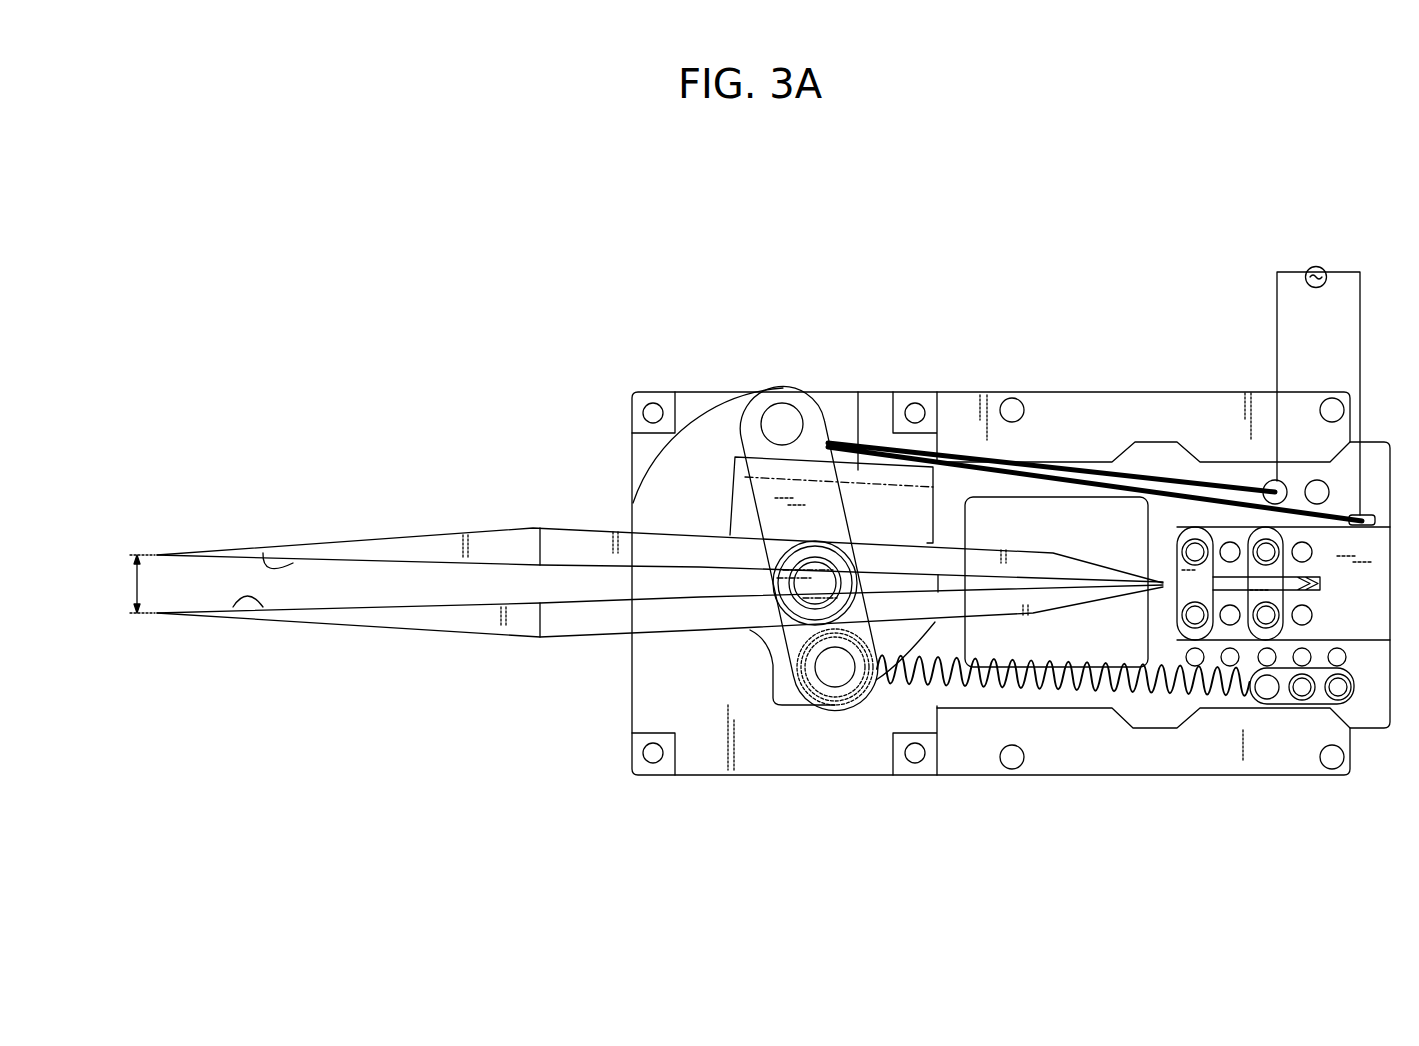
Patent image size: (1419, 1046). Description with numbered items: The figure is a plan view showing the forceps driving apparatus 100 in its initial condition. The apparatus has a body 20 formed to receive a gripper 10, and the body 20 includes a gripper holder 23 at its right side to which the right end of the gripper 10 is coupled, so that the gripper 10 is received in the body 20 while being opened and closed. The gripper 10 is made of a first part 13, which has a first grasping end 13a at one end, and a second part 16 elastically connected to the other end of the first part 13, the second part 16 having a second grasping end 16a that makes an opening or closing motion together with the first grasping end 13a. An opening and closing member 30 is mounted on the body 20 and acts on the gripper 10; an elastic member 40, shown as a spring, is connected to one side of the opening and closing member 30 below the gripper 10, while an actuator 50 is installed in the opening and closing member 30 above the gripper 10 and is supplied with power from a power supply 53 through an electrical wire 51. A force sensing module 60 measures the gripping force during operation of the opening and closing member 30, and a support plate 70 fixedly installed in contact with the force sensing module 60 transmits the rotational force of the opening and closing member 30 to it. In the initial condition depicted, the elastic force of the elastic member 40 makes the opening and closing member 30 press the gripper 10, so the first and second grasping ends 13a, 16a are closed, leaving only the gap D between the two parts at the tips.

The forceps driving apparatus 100 is at (768, 298).
The gripper 10 is at (496, 520).
The first part 13 is at (377, 537).
The first grasping end 13a is at (267, 550).
The second part 16 is at (412, 633).
The second grasping end 16a is at (233, 607).
The body 20 is at (768, 777).
The gripper holder 23 is at (1178, 550).
The opening and closing member 30 is at (834, 406).
The elastic member 40 is at (1073, 697).
The actuator 50 is at (1073, 462).
The electrical wire 51 is at (1277, 318).
The power supply 53 is at (1326, 268).
The force sensing module 60 is at (727, 503).
The support plate 70 is at (737, 468).
The gap distance D is at (133, 584).